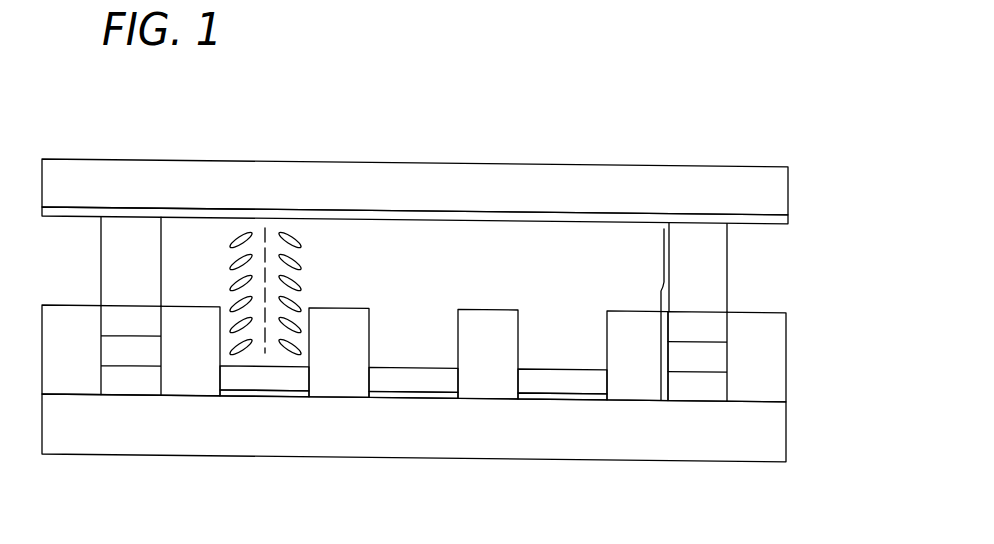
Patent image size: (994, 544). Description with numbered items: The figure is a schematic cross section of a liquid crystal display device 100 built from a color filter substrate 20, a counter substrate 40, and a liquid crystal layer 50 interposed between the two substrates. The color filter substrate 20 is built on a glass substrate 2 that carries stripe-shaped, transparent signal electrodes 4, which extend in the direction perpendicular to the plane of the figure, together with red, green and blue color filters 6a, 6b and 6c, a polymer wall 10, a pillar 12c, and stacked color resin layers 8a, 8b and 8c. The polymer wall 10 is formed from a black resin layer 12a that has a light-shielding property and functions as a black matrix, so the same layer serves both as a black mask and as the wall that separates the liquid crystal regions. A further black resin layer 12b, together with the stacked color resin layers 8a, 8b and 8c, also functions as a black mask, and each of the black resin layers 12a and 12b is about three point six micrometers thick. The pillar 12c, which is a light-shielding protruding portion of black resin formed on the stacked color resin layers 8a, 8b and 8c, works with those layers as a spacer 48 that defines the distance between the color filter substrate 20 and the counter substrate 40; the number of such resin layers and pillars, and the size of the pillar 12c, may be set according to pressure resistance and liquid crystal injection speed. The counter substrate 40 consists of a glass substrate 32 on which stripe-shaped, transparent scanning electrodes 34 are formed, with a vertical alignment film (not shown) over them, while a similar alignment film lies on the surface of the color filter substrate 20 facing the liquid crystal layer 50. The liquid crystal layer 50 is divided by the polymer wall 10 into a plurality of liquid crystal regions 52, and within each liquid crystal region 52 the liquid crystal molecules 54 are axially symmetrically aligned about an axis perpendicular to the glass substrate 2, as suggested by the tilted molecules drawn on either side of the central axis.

The liquid crystal display device 100 is at (700, 136).
The counter substrate 40 is at (838, 152).
The glass substrate 32 is at (772, 184).
The transparent scanning electrodes 34 is at (785, 222).
The liquid crystal layer 50 is at (450, 277).
The liquid crystal regions 52 is at (302, 235).
The liquid crystal molecules 54 is at (244, 232).
The spacer 48 is at (661, 284).
The color filter substrate 20 is at (841, 278).
The glass substrate 2 is at (777, 433).
The transparent signal electrodes 4 is at (290, 395).
The red color filter 6a is at (243, 379).
The green color filter 6b is at (383, 385).
The blue color filter 6c is at (539, 385).
The color resin layer 8a is at (675, 392).
The color resin layer 8b is at (708, 367).
The color resin layer 8c is at (717, 330).
The polymer wall 10 is at (487, 304).
The black resin layer 12a is at (497, 385).
The black resin layer 12b is at (643, 390).
The pillar 12c is at (717, 297).